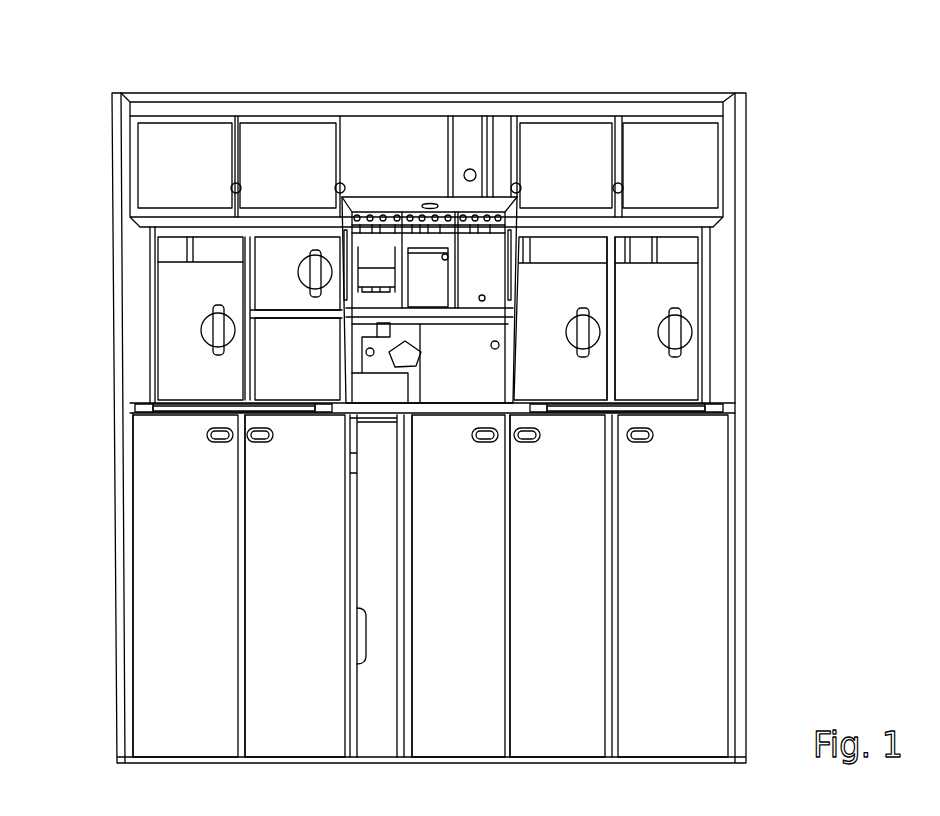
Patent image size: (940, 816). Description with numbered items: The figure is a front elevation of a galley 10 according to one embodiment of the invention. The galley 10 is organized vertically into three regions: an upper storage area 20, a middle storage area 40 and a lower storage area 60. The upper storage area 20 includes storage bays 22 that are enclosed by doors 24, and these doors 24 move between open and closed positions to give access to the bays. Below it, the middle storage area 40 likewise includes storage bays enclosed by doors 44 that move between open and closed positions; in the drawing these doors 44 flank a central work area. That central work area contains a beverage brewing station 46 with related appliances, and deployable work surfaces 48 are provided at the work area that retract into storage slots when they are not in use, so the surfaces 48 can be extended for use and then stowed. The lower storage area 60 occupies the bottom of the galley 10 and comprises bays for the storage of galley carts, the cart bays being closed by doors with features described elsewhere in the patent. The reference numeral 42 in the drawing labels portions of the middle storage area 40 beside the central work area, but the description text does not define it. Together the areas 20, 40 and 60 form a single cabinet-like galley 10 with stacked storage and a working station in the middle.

The galley 10 is at (800, 82).
The upper storage area 20 is at (100, 92).
The storage bays 22 is at (182, 108).
The doors 24 is at (165, 158).
The middle storage area 40 is at (100, 218).
The side cabinets 42 is at (188, 388).
The doors 44 is at (182, 295).
The beverage brewing station 46 is at (422, 270).
The deployable work surfaces 48 is at (167, 414).
The lower storage area 60 is at (102, 417).